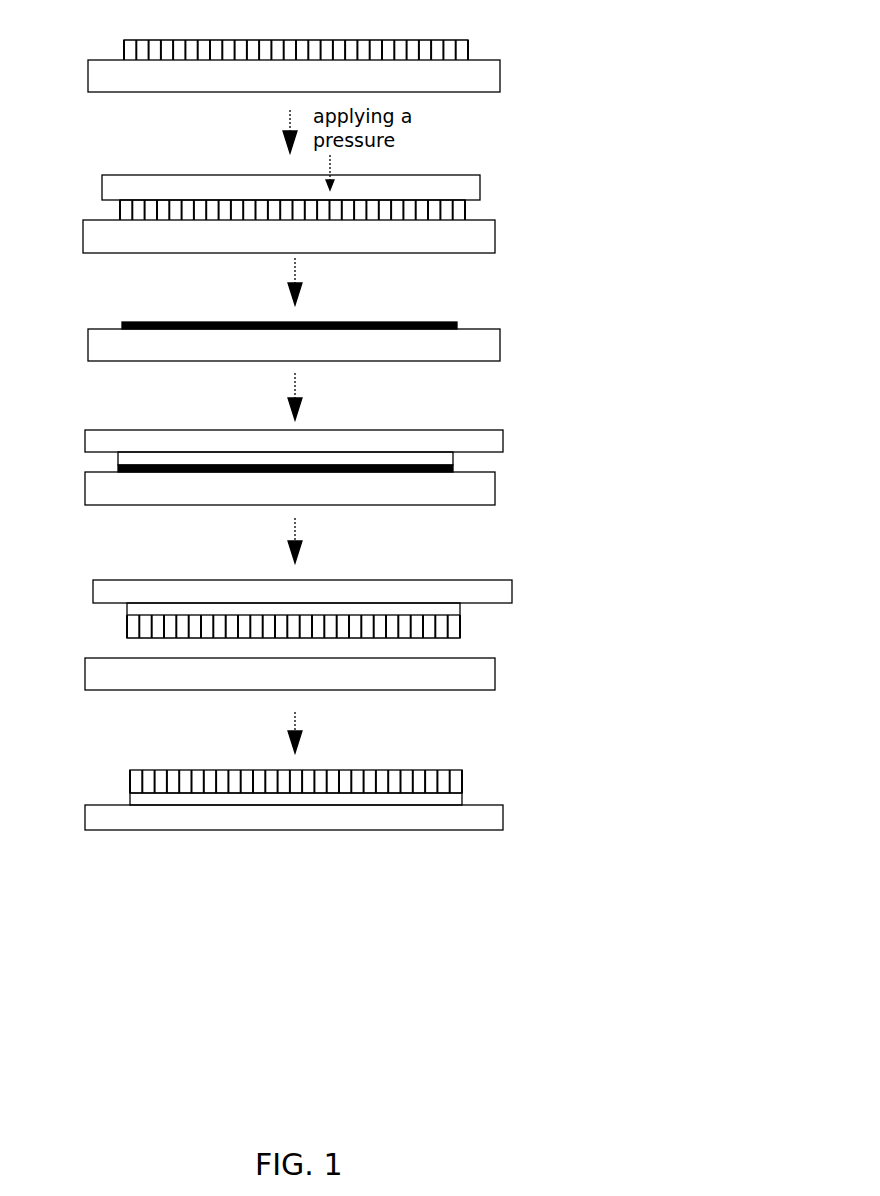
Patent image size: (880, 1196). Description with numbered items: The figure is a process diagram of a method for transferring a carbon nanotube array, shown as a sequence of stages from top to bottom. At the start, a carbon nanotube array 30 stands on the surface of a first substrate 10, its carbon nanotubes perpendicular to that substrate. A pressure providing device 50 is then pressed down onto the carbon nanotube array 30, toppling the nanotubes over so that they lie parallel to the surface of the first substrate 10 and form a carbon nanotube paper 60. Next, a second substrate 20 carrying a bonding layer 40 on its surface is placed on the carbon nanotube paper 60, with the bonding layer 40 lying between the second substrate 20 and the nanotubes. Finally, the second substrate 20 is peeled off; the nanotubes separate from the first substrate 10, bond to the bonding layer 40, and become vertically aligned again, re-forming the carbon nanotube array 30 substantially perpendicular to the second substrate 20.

The first substrate 10 is at (467, 78).
The second substrate 20 is at (112, 430).
The carbon nanotube array 30 is at (153, 38).
The bonding layer 40 is at (133, 457).
The pressure providing device 50 is at (453, 175).
The carbon nanotube paper 60 is at (448, 322).